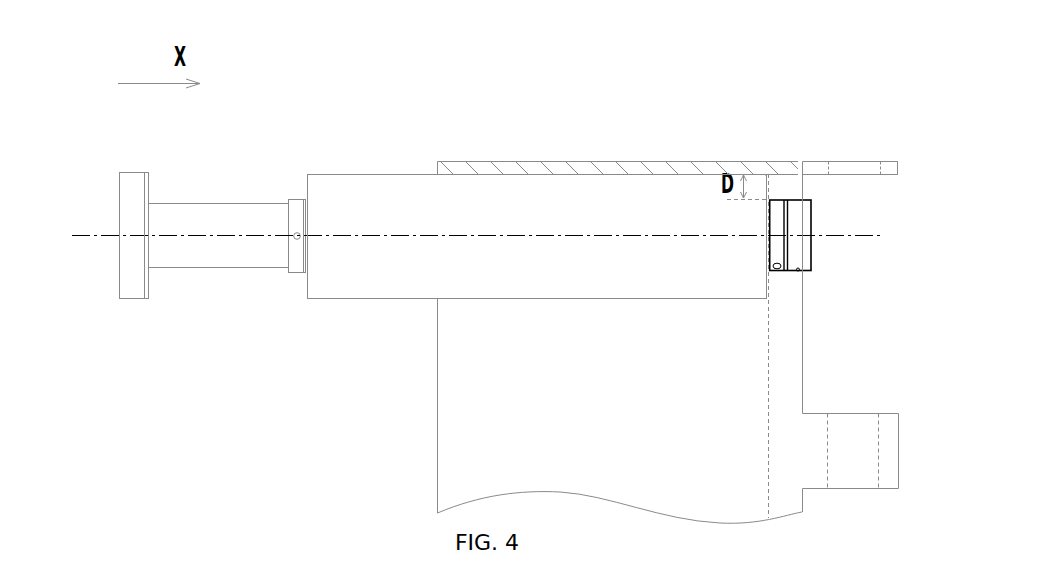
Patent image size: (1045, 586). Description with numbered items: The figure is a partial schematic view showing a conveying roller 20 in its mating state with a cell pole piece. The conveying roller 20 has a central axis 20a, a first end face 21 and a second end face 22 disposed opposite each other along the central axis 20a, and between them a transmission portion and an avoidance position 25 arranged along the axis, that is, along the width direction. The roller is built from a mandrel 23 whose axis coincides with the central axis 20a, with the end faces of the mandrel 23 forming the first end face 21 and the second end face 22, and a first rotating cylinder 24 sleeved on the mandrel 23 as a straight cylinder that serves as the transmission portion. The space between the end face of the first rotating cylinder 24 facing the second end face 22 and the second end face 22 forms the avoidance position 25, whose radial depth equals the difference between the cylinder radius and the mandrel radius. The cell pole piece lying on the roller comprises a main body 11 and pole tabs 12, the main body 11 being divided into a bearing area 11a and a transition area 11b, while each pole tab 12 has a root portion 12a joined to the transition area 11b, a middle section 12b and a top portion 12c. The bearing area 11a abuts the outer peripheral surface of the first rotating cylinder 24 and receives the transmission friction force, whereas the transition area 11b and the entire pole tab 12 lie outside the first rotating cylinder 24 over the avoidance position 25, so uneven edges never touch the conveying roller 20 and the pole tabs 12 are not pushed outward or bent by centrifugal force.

The main body 11 is at (645, 77).
The bearing area 11a is at (663, 168).
The transition area 11b is at (790, 165).
The pole tab 12 is at (787, 77).
The root portion 12a is at (813, 167).
The middle section 12b is at (852, 167).
The top portion 12c is at (888, 167).
The conveying roller 20 is at (263, 151).
The central axis 20a is at (90, 246).
The first end face 21 is at (118, 199).
The second end face 22 is at (811, 256).
The mandrel 23 is at (233, 257).
The first rotating cylinder 24 is at (385, 186).
The avoidance position 25 is at (800, 192).